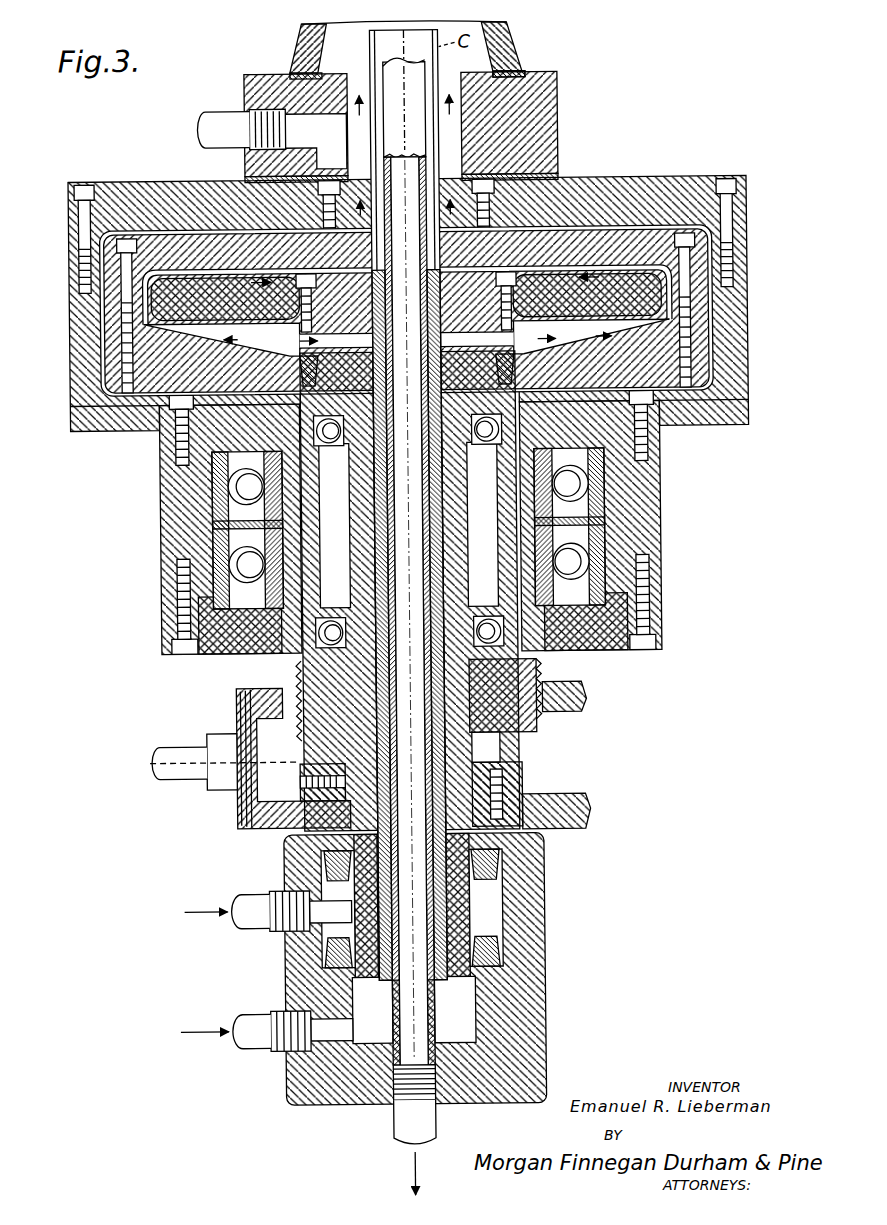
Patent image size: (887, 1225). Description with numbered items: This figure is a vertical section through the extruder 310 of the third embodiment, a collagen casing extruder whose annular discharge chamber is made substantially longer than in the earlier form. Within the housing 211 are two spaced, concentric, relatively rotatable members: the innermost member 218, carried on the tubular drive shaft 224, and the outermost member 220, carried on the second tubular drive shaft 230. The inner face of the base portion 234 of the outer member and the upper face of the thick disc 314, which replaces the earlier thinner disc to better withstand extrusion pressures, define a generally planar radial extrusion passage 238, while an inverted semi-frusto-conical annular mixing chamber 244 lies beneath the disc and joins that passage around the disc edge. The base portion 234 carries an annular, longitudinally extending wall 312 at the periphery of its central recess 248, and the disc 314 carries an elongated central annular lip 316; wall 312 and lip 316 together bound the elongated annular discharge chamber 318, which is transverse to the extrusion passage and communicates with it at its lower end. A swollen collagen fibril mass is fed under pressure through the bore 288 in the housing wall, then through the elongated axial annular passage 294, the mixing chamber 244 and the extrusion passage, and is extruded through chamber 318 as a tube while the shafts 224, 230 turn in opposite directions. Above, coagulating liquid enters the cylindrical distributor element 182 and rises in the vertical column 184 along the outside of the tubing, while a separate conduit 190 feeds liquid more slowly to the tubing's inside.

The vertical column 184 is at (515, 41).
The cylindrical distributor element 182 is at (557, 102).
The annular lip 316 is at (546, 130).
The annular longitudinally extending wall 312 is at (548, 144).
The elongated annular discharge chamber 318 is at (560, 170).
The central recess 248 is at (487, 215).
The radial extrusion passage 238 is at (640, 248).
The extruder 310 is at (674, 126).
The base portion 234 is at (163, 237).
The housing 211 is at (67, 274).
The innermost member 218 is at (181, 326).
The disc 314 is at (645, 290).
The annular mixing chamber 244 is at (606, 328).
The outermost member 220 is at (157, 401).
The second tubular drive shaft 230 is at (519, 730).
The tubular drive shaft 224 is at (452, 754).
The bore 288 is at (241, 906).
The annular passage 294 is at (430, 902).
The conduit 190 is at (239, 1024).